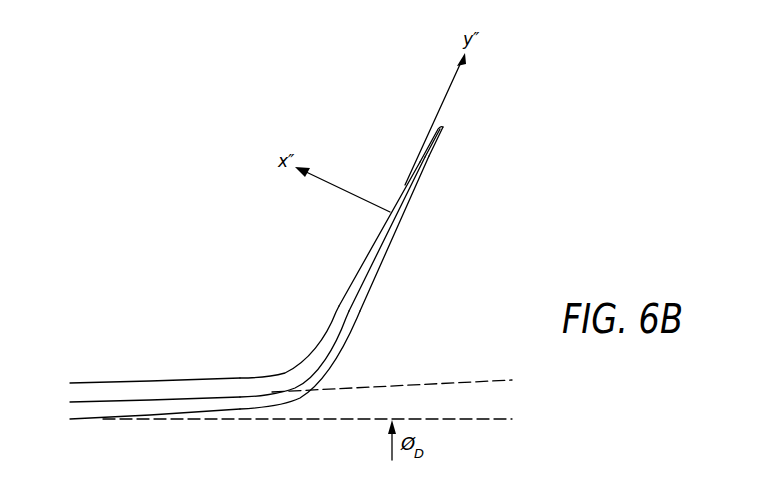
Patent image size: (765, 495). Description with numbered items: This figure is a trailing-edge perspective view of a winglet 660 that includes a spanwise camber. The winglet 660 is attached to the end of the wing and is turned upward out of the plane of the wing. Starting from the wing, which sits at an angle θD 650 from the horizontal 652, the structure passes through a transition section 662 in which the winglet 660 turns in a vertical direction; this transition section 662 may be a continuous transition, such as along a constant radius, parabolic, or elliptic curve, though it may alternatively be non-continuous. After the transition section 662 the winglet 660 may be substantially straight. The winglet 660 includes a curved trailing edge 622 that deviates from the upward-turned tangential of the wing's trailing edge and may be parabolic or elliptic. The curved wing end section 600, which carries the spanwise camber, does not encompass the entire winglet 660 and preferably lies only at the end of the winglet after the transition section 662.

The wing end section 600 is at (507, 158).
The curved trailing edge 622 is at (431, 150).
The angle θD 650 is at (389, 375).
The horizontal 652 is at (485, 419).
The winglet 660 is at (252, 256).
The transition section 662 is at (331, 314).